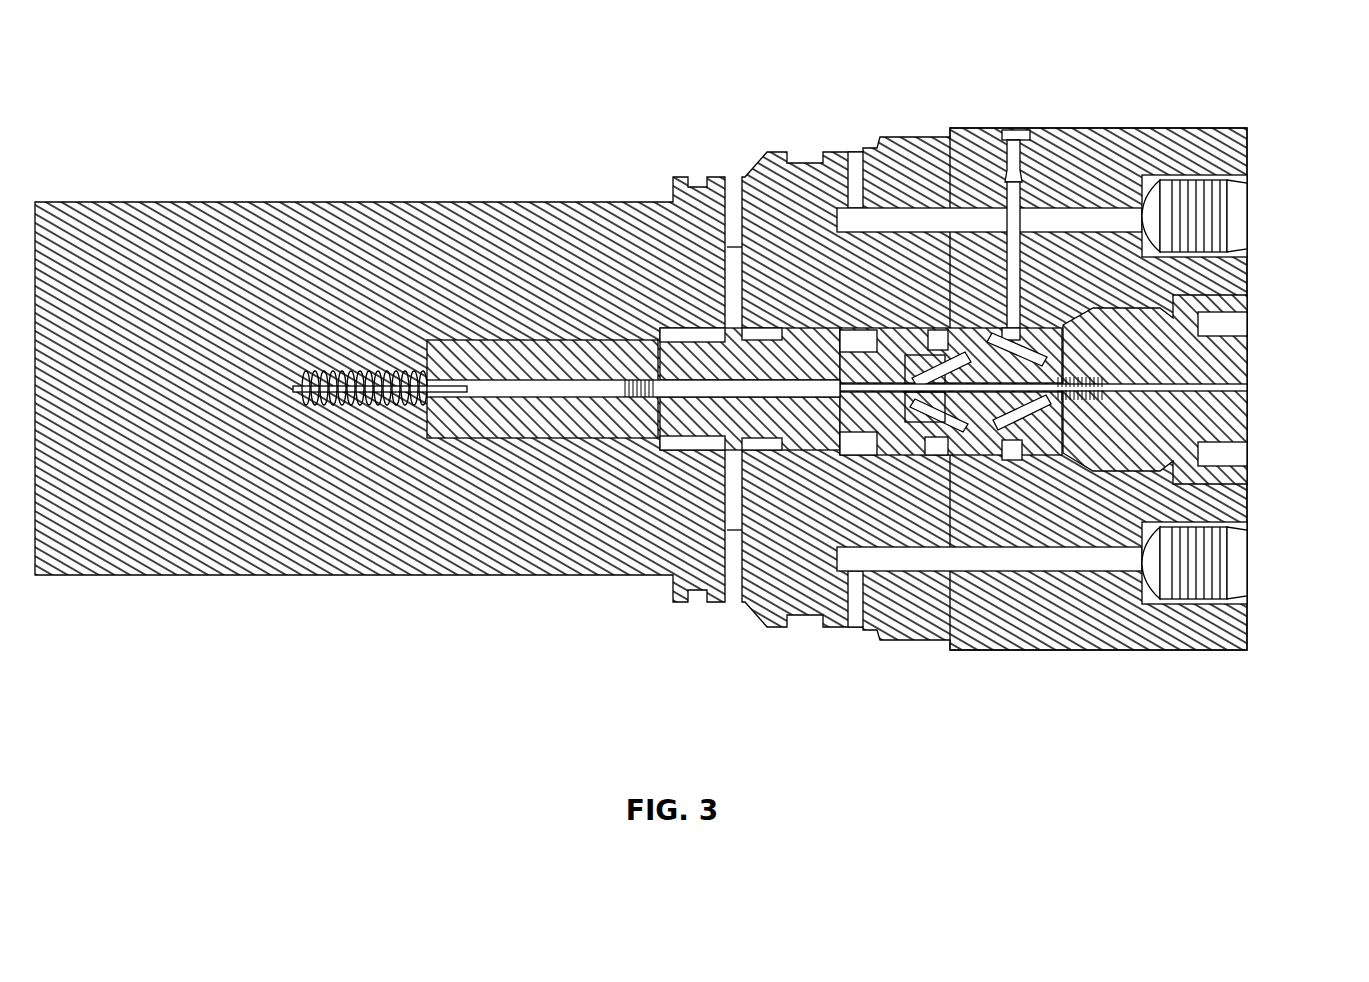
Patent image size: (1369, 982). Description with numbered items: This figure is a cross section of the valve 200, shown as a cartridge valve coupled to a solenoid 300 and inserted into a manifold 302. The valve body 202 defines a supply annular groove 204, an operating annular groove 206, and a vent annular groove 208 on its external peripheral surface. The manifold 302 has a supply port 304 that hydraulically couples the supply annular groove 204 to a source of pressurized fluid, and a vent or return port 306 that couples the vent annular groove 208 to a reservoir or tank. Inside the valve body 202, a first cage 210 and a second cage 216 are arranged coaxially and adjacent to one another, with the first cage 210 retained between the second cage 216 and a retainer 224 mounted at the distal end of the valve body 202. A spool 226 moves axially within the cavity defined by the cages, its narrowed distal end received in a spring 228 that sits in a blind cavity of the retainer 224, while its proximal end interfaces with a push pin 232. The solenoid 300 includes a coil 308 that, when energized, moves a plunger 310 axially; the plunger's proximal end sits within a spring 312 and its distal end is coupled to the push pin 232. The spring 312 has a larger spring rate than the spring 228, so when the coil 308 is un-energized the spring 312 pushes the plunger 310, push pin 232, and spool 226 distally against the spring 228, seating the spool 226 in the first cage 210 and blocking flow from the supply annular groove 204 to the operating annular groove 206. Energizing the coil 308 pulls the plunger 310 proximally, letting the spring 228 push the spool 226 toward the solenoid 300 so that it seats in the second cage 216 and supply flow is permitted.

The solenoid 300 is at (698, 404).
The coil 308 is at (457, 232).
The spring 312 is at (355, 365).
The plunger 310 is at (495, 385).
The push pin 232 is at (693, 355).
The valve 200 is at (775, 308).
The valve body 202 is at (880, 318).
The operating annular groove 206 is at (933, 318).
The supply annular groove 204 is at (1005, 322).
The manifold 302 is at (1093, 143).
The supply port 304 is at (1245, 218).
The vent or return port 306 is at (1245, 565).
The first cage 210 is at (1020, 355).
The vent annular groove 208 is at (838, 437).
The second cage 216 is at (918, 398).
The spool 226 is at (985, 396).
The spring 228 is at (1070, 400).
The retainer 224 is at (1147, 413).